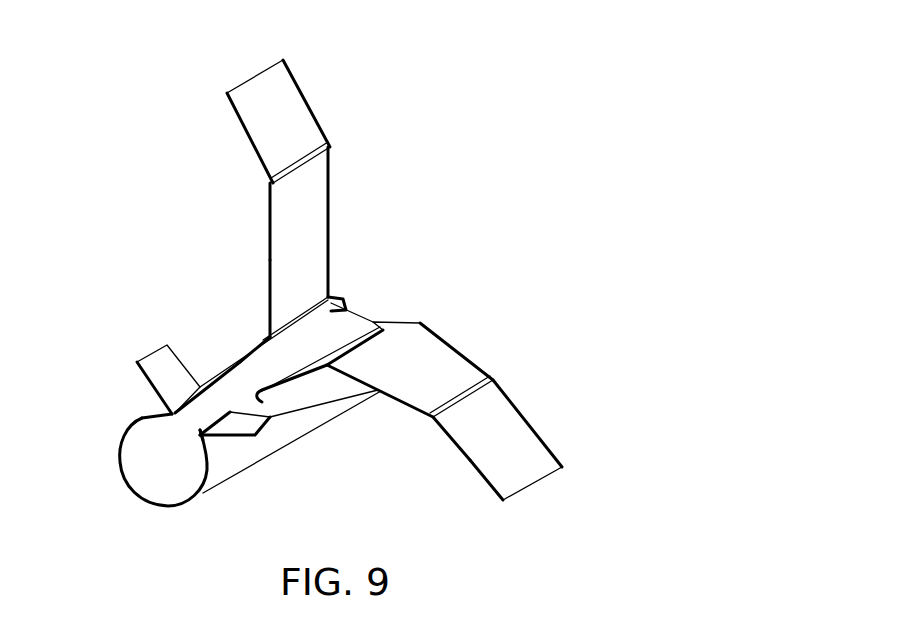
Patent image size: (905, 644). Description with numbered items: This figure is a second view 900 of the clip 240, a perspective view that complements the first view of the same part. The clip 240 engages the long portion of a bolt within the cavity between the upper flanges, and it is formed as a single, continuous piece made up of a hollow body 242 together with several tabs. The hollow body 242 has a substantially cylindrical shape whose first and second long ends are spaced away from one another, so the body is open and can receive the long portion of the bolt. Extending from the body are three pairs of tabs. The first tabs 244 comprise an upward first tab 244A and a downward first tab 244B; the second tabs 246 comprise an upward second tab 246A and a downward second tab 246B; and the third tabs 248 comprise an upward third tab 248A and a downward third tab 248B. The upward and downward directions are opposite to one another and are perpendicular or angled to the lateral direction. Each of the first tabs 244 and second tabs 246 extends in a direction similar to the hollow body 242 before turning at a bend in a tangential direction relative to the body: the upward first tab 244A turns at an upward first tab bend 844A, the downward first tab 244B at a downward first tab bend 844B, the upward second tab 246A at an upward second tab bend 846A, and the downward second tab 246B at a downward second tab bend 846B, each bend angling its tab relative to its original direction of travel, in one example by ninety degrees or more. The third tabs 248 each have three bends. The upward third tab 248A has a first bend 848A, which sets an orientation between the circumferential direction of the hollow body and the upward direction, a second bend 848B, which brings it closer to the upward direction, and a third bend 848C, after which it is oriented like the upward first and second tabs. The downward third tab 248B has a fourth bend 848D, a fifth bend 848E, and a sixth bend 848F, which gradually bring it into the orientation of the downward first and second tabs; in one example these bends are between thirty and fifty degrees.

The second view 900 is at (622, 152).
The clip 240 is at (547, 269).
The hollow body 242 is at (148, 498).
The first tabs 244 is at (462, 316).
The upward first tab 244A is at (332, 292).
The downward first tab 244B is at (425, 323).
The second tabs 246 is at (108, 343).
The upward second tab 246A is at (141, 360).
The downward second tab 246B is at (268, 428).
The third tabs 248 is at (360, 75).
The upward third tab 248A is at (227, 93).
The downward third tab 248B is at (505, 502).
The upward first tab bend 844A is at (347, 307).
The downward first tab bend 844B is at (373, 322).
The upward second tab bend 846A is at (178, 418).
The downward second tab bend 846B is at (203, 436).
The first bend 848A is at (242, 358).
The second bend 848B is at (267, 337).
The third bend 848C is at (270, 183).
The fourth bend 848D is at (262, 398).
The fifth bend 848E is at (327, 368).
The sixth bend 848F is at (433, 418).